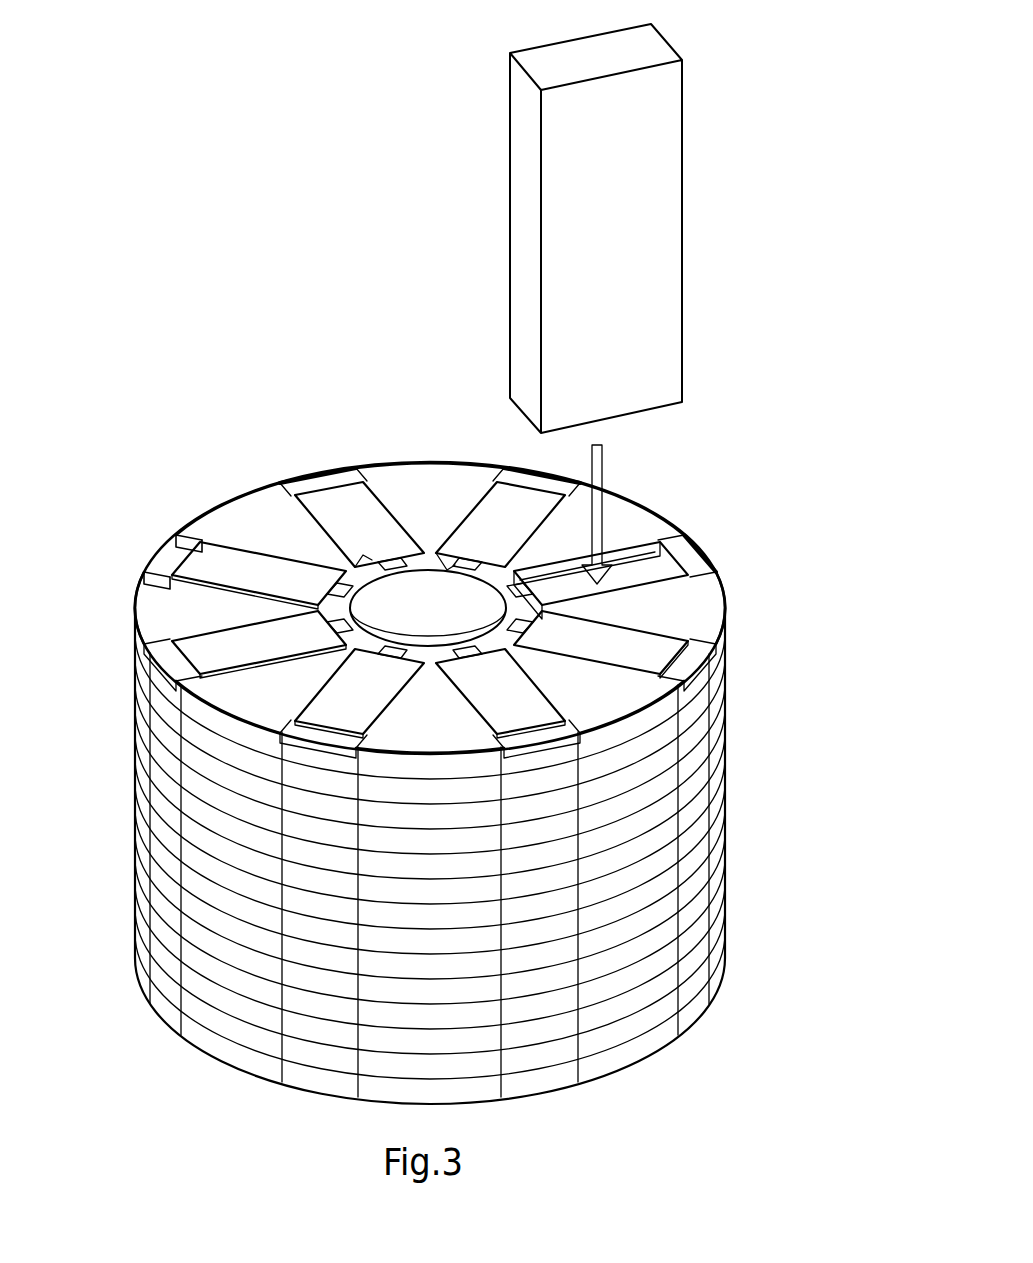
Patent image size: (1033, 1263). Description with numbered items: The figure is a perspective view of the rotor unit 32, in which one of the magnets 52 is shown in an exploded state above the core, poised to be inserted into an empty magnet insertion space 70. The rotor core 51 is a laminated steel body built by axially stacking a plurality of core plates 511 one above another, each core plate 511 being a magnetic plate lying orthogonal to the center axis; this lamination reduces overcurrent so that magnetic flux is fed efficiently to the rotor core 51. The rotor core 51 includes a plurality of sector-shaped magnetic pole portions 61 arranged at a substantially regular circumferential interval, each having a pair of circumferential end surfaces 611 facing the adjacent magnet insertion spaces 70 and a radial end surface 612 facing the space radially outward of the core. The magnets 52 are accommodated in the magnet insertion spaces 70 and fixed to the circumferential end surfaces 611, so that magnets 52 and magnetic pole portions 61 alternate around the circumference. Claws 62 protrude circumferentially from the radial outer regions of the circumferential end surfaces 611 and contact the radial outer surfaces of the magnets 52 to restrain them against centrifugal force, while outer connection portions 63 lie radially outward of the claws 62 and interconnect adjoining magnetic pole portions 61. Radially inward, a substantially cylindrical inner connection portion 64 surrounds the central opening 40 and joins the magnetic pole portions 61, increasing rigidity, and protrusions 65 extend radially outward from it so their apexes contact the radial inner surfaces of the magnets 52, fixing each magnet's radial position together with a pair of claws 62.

The rotor unit 32 is at (308, 296).
The shaft hole 40 is at (398, 590).
The rotor core 51 is at (753, 655).
The core plate 511 is at (717, 772).
The magnet 52 is at (630, 213).
The magnetic pole portion 61 is at (618, 517).
The circumferential end surface 611 is at (625, 562).
The radial end surface 612 is at (635, 927).
The claw 62 is at (195, 540).
The outer connection portion 63 is at (160, 545).
The inner connection portion 64 is at (447, 570).
The protrusion 65 is at (363, 555).
The magnet insertion space 70 is at (565, 558).